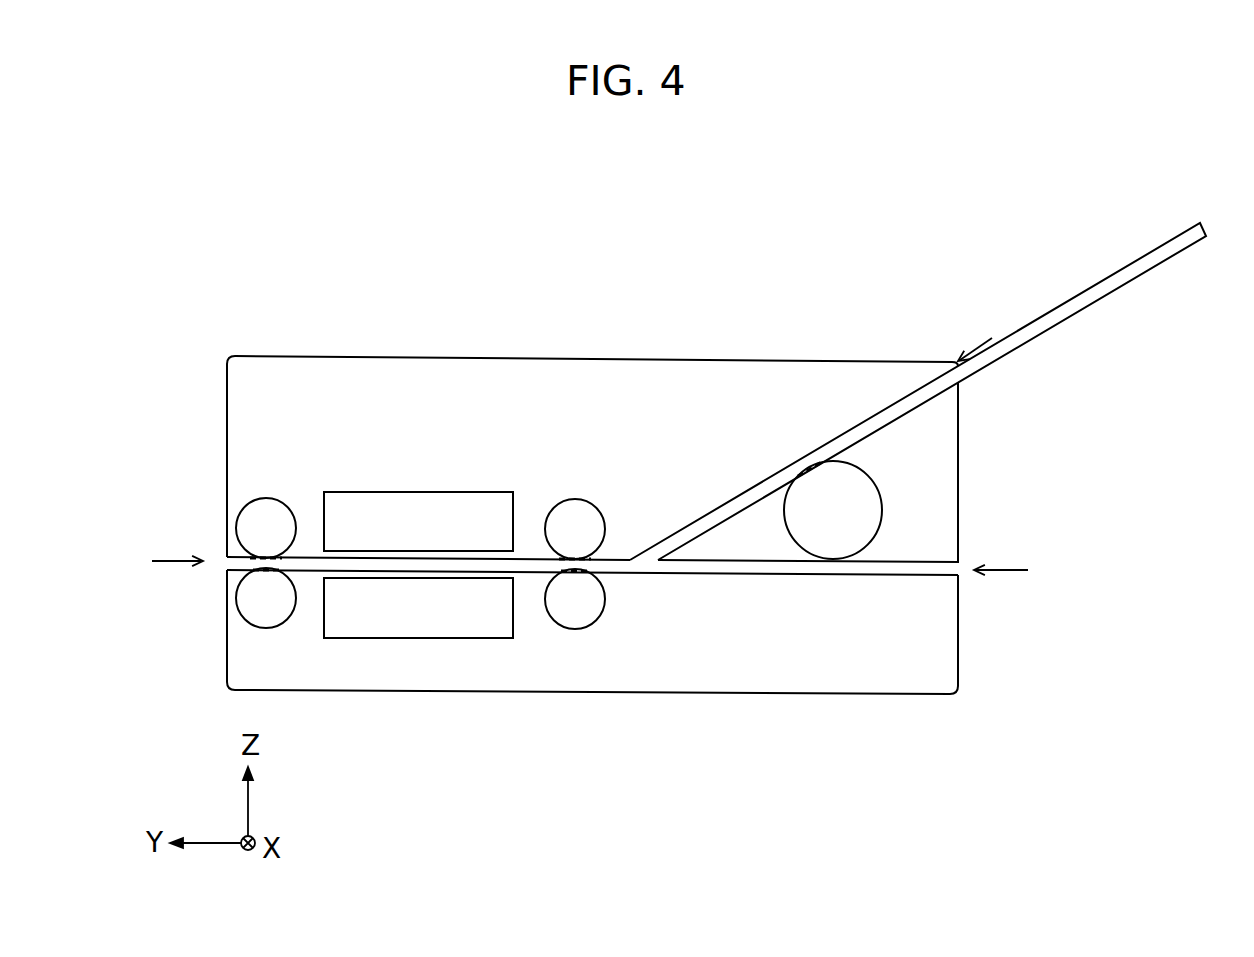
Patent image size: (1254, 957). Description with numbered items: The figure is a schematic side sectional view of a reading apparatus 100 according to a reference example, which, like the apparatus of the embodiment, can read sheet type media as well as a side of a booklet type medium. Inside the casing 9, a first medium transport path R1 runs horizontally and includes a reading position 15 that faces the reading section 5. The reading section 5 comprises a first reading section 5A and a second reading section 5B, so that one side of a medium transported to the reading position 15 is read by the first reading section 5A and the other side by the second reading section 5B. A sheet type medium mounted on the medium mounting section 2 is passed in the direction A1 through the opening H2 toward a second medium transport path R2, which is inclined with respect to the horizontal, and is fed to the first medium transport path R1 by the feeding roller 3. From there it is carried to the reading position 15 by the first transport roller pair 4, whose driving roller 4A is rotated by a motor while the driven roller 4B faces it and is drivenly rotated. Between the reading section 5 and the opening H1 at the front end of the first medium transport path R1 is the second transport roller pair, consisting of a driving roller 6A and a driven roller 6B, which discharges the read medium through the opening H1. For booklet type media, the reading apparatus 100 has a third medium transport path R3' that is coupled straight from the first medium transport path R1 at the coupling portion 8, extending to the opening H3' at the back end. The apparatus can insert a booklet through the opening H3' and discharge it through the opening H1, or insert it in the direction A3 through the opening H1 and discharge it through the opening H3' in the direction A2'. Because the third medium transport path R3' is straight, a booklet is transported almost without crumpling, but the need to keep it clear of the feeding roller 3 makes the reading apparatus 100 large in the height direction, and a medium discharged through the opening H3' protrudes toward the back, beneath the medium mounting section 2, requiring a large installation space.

The reading apparatus 100 is at (971, 217).
The medium mounting section 2 is at (1070, 300).
The feeding roller 3 is at (830, 513).
The first transport roller pair 4 is at (595, 317).
The driving roller 4A is at (580, 533).
The driven roller 4B is at (568, 588).
The reading section 5 is at (490, 317).
The first reading section 5A is at (417, 610).
The second reading section 5B is at (360, 513).
The driving roller 6A is at (267, 593).
The driven roller 6B is at (262, 520).
The coupling portion 8 is at (639, 589).
The casing 9 is at (960, 448).
The reading position 15 is at (439, 567).
The first medium transport path R1 is at (349, 571).
The second medium transport path R2 is at (810, 453).
The third medium transport path R3' is at (808, 667).
The opening H1 is at (227, 569).
The opening H2 is at (955, 360).
The opening H3' is at (988, 596).
The direction A1 is at (981, 336).
The conveyance direction A2' is at (1002, 551).
The direction A3 is at (177, 541).